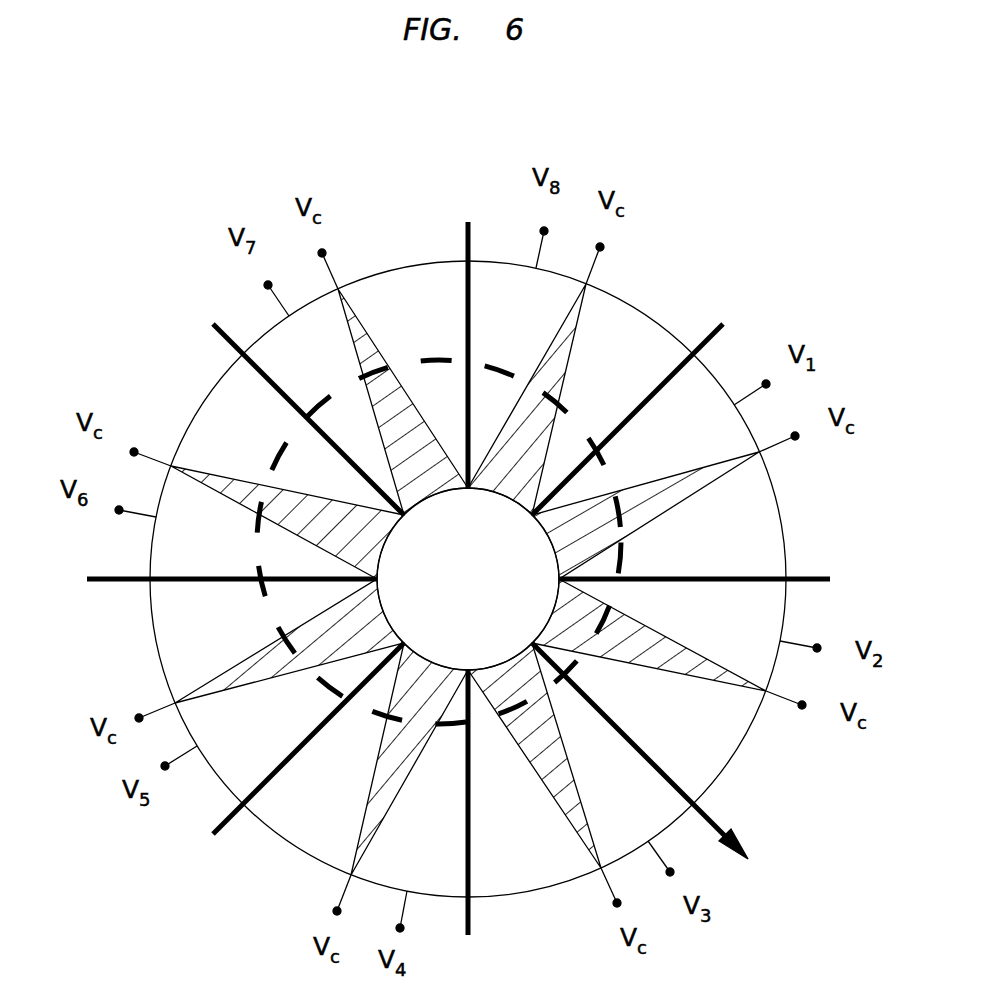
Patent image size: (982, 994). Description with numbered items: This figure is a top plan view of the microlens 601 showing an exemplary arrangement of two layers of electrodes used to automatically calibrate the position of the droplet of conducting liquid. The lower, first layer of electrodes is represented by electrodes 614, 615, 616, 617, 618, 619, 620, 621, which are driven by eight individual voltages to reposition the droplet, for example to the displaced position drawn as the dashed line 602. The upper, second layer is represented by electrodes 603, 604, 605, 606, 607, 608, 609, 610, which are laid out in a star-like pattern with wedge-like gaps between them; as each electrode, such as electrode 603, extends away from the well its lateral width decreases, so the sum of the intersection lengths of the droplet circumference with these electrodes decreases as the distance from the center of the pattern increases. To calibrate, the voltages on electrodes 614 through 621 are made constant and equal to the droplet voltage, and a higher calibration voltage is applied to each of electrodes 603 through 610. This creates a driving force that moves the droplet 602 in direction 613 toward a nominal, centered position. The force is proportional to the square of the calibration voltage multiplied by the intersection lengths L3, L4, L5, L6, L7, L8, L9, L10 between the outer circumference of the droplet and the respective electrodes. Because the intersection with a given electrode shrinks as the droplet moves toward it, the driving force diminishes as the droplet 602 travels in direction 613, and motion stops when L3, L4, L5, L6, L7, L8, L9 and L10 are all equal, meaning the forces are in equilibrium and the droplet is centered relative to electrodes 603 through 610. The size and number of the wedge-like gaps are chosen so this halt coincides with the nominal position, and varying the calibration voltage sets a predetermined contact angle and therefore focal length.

The microlens 601 is at (154, 175).
The droplet 602 is at (628, 545).
The electrode 603 is at (686, 498).
The electrode 604 is at (692, 625).
The electrode 605 is at (556, 799).
The electrode 606 is at (399, 799).
The electrode 607 is at (234, 667).
The electrode 608 is at (233, 498).
The electrode 609 is at (374, 348).
The electrode 610 is at (552, 348).
The direction 613 is at (720, 833).
The electrode 614 is at (745, 429).
The electrode 615 is at (736, 748).
The electrode 616 is at (506, 874).
The electrode 617 is at (302, 836).
The electrode 618 is at (152, 600).
The electrode 619 is at (210, 404).
The electrode 620 is at (428, 276).
The electrode 621 is at (514, 272).
The intersection length L3 is at (618, 492).
The intersection length L4 is at (620, 616).
The intersection length L5 is at (516, 712).
The intersection length L6 is at (384, 720).
The intersection length L7 is at (282, 634).
The intersection length L8 is at (300, 424).
The intersection length L9 is at (348, 388).
The intersection length L10 is at (558, 405).